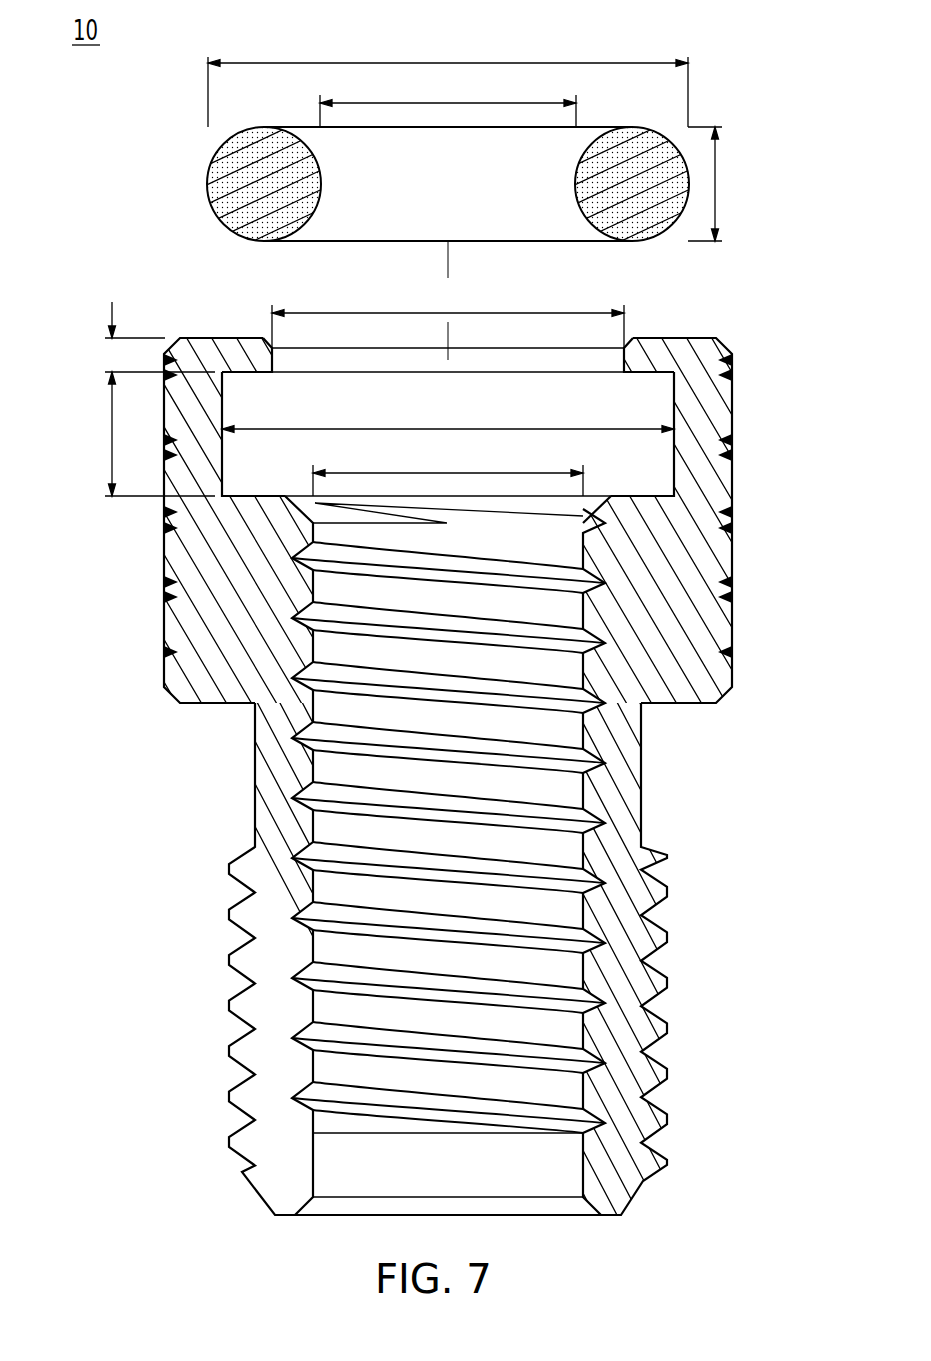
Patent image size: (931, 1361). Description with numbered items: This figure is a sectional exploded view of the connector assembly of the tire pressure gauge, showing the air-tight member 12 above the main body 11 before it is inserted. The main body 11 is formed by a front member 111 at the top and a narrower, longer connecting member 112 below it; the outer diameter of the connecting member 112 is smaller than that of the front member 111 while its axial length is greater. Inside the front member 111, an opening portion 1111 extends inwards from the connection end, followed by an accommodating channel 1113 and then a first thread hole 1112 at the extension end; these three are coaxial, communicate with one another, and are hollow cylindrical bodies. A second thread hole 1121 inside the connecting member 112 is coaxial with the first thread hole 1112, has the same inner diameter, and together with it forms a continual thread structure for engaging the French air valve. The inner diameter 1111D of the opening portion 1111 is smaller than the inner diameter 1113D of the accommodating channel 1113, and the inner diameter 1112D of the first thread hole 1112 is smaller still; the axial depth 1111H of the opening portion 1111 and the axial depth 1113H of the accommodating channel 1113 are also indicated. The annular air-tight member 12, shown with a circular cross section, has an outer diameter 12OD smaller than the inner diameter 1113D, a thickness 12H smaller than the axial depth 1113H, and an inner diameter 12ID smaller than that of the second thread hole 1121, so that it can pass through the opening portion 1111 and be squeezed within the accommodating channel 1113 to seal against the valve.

The main body 11 is at (86, 615).
The front member 111 is at (215, 623).
The connecting member 112 is at (290, 745).
The opening portion 1111 is at (590, 360).
The first thread hole 1112 is at (540, 608).
The accommodating channel 1113 is at (660, 396).
The second thread hole 1121 is at (530, 910).
The air-tight member 12 is at (208, 207).
The outer diameter of the air-tight member 12OD is at (448, 78).
The inner diameter of the air-tight member 12ID is at (448, 97).
The thickness of the air-tight member 12H is at (728, 184).
The inner diameter of the opening portion 1111D is at (448, 313).
The axial depth of the opening portion 1111H is at (122, 343).
The inner diameter of the accommodating channel 1113D is at (448, 413).
The axial depth of the accommodating channel 1113H is at (122, 434).
The inner diameter of the first thread hole 1112D is at (448, 467).